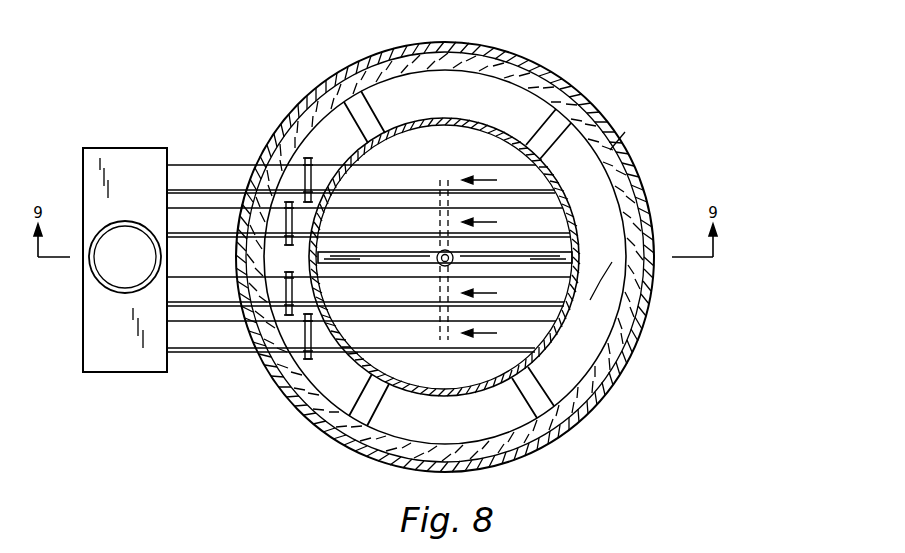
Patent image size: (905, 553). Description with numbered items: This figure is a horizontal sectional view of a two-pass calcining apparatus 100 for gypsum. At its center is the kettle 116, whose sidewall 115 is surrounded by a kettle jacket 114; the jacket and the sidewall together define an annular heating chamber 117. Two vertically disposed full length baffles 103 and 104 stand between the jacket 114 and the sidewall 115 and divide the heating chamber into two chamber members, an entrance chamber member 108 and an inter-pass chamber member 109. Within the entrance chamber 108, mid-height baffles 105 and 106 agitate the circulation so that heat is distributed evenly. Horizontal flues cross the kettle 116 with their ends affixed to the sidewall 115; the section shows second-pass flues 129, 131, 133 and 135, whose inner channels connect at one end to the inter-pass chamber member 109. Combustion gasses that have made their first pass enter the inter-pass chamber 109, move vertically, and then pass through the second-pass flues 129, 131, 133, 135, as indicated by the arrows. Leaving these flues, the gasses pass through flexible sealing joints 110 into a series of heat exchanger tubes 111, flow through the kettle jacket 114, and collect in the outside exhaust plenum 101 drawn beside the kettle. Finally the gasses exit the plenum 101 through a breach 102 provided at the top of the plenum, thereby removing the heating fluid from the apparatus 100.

The two-pass calcining apparatus 100 is at (660, 121).
The outside exhaust plenum 101 is at (108, 167).
The breach 102 is at (100, 280).
The full length baffle 103 is at (545, 130).
The full length baffle 104 is at (548, 372).
The mid-height baffle 105 is at (373, 82).
The mid-height baffle 106 is at (372, 447).
The entrance chamber member 108 is at (330, 383).
The inter-pass chamber member 109 is at (593, 177).
The flexible sealing joints 110 is at (285, 222).
The heat exchanger tubes 111 is at (207, 218).
The kettle jacket 114 is at (643, 193).
The kettle sidewall 115 is at (577, 268).
The kettle 116 is at (477, 112).
The heating chamber 117 is at (584, 152).
The second-pass flue 129 is at (425, 181).
The second-pass flue 131 is at (556, 222).
The second-pass flue 133 is at (565, 290).
The second-pass flue 135 is at (424, 335).